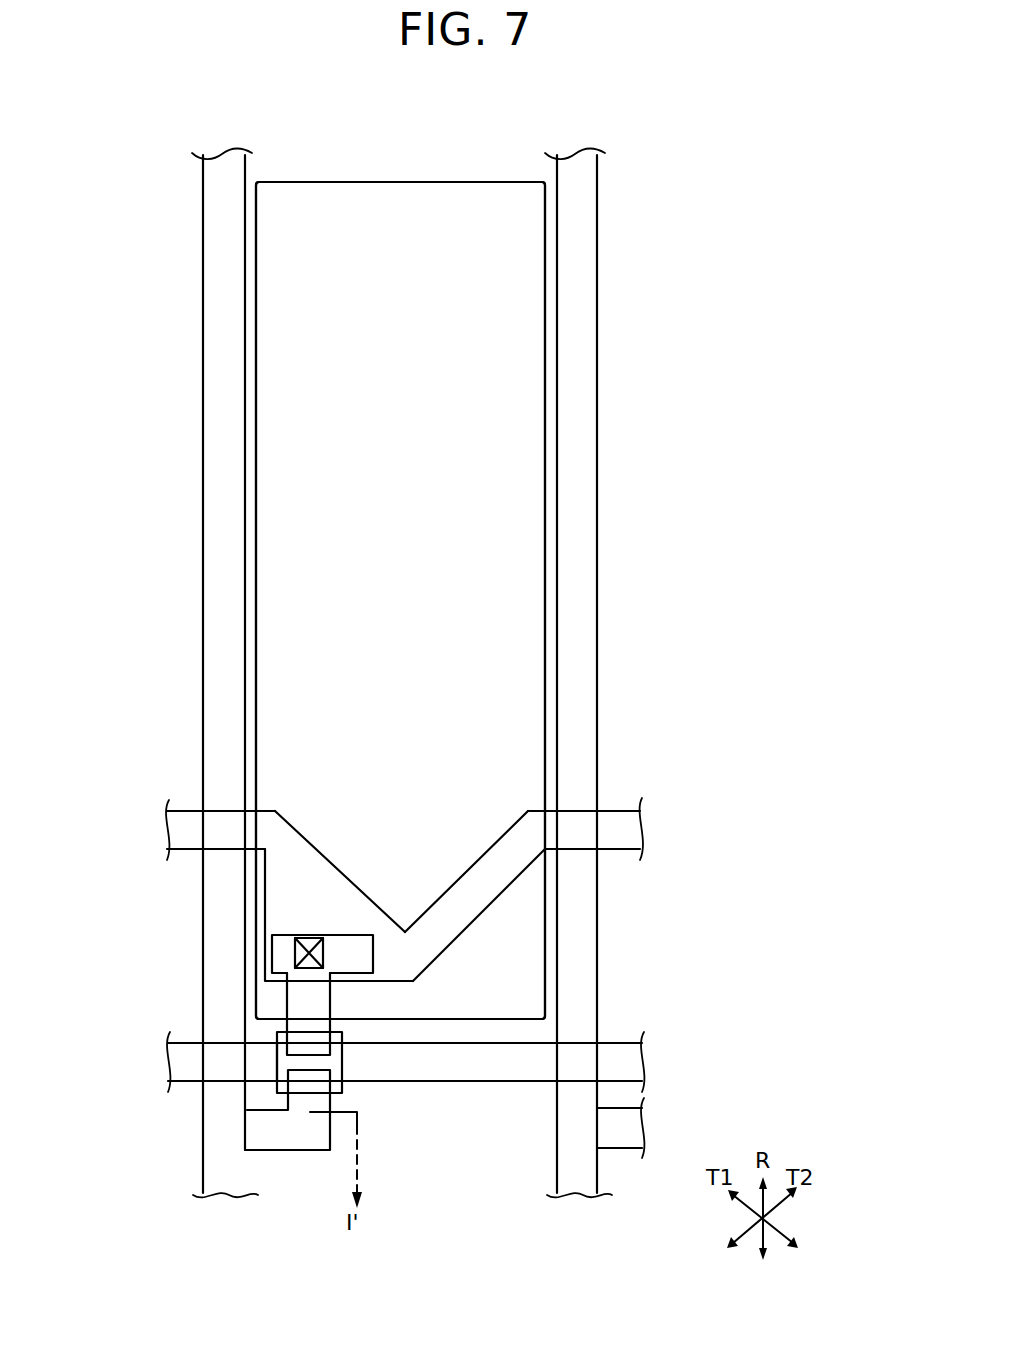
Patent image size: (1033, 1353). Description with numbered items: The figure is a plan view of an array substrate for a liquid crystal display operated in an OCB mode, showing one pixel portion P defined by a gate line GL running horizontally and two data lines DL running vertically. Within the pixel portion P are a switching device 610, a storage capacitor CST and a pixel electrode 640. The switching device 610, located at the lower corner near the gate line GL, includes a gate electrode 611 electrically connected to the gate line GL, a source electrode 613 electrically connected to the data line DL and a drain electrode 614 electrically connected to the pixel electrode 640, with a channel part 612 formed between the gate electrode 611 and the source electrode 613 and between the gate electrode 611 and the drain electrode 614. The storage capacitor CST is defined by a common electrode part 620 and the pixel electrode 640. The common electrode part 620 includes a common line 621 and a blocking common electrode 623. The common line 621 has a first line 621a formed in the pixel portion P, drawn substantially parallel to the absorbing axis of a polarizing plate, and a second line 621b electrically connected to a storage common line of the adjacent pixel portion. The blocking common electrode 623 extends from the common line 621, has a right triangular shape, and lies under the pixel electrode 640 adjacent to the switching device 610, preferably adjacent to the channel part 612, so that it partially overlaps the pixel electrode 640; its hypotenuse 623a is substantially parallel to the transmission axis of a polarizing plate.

The switching device 610 is at (196, 1070).
The gate electrode 611 is at (280, 1063).
The channel part 612 is at (283, 1088).
The source electrode 613 is at (308, 1100).
The drain electrode 614 is at (298, 1028).
The common electrode part 620 is at (476, 806).
The common line 621 is at (569, 840).
The first line 621a is at (490, 858).
The second line 621b is at (583, 819).
The blocking common electrode 623 is at (284, 836).
The hypotenuse 623a is at (320, 848).
The pixel electrode 640 is at (520, 553).
The storage capacitor CST is at (782, 555).
The gate line GL is at (631, 1060).
The data line DL is at (225, 1183).
The pixel portion P is at (392, 496).